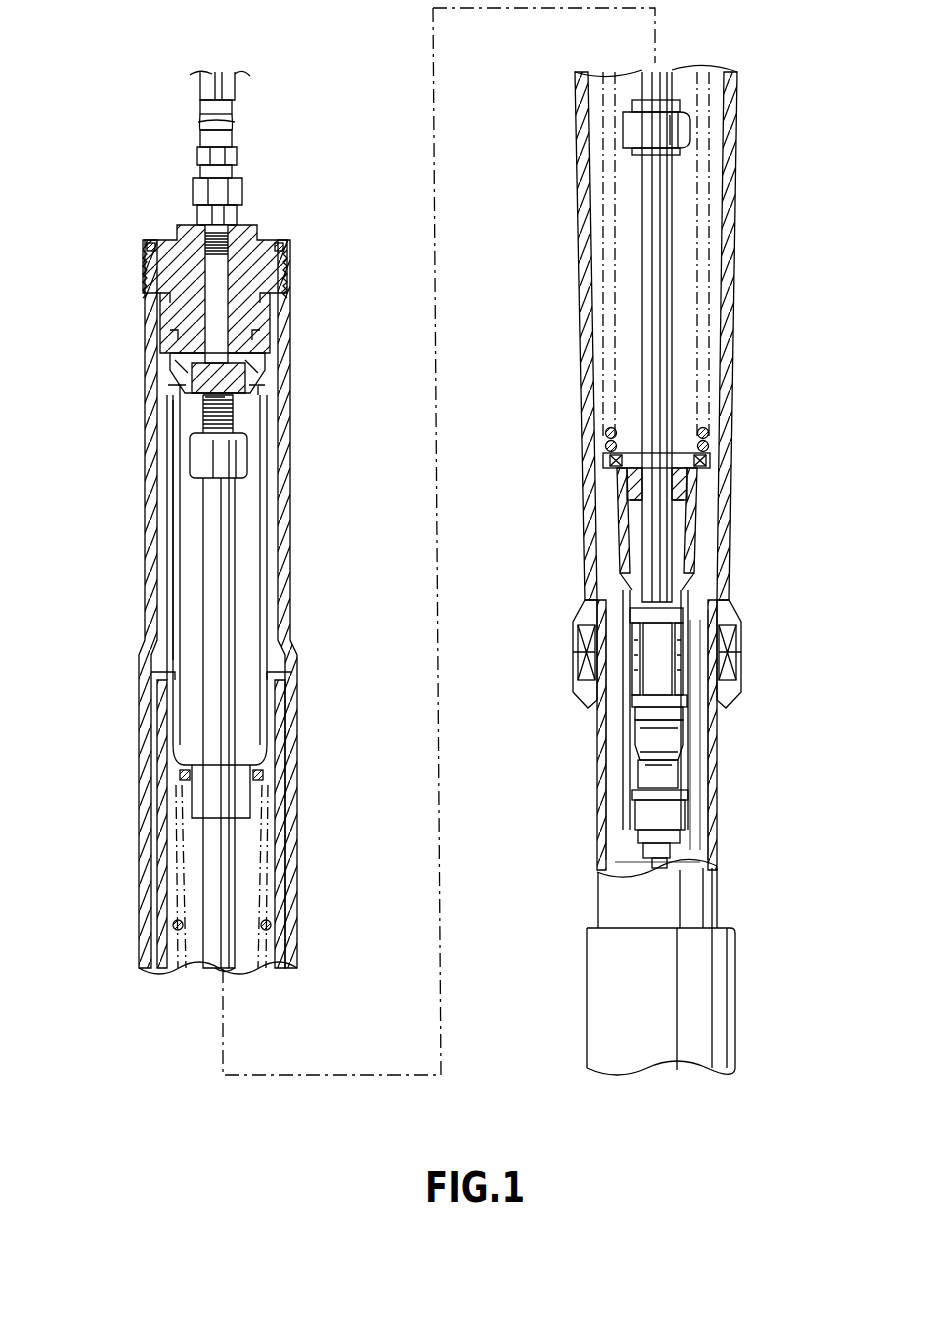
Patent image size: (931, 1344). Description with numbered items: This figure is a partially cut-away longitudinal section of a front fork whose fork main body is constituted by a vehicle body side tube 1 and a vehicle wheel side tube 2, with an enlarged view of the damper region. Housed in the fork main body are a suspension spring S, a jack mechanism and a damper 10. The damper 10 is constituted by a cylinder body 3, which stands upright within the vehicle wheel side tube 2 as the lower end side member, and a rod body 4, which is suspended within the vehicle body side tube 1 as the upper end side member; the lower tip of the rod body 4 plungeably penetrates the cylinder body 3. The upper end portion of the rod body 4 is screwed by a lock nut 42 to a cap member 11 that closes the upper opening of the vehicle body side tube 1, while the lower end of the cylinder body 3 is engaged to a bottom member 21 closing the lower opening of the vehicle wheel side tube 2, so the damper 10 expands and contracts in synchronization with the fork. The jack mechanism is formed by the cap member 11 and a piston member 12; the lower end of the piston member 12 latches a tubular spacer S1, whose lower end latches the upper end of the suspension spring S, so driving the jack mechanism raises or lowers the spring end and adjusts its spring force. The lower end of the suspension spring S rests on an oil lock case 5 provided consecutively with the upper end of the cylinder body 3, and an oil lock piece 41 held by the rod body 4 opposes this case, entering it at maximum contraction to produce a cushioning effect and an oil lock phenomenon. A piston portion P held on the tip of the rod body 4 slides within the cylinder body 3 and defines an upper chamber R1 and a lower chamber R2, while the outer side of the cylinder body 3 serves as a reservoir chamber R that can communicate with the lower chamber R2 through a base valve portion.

The vehicle body side tube 1 is at (152, 584).
The vehicle wheel side tube 2 is at (165, 968).
The cylinder body 3 is at (693, 808).
The rod body 4 is at (238, 582).
The oil lock case 5 is at (698, 515).
The damper 10 is at (247, 563).
The cap member 11 is at (262, 237).
The piston member 12 is at (178, 374).
The bottom member 21 is at (737, 1012).
The oil lock piece 41 is at (691, 128).
The lock nut 42 is at (250, 445).
The suspension spring S is at (185, 790).
The spacer S1 is at (172, 510).
The reservoir chamber R is at (700, 745).
The upper chamber R1 is at (635, 745).
The lower chamber R2 is at (650, 848).
The piston portion P is at (676, 827).